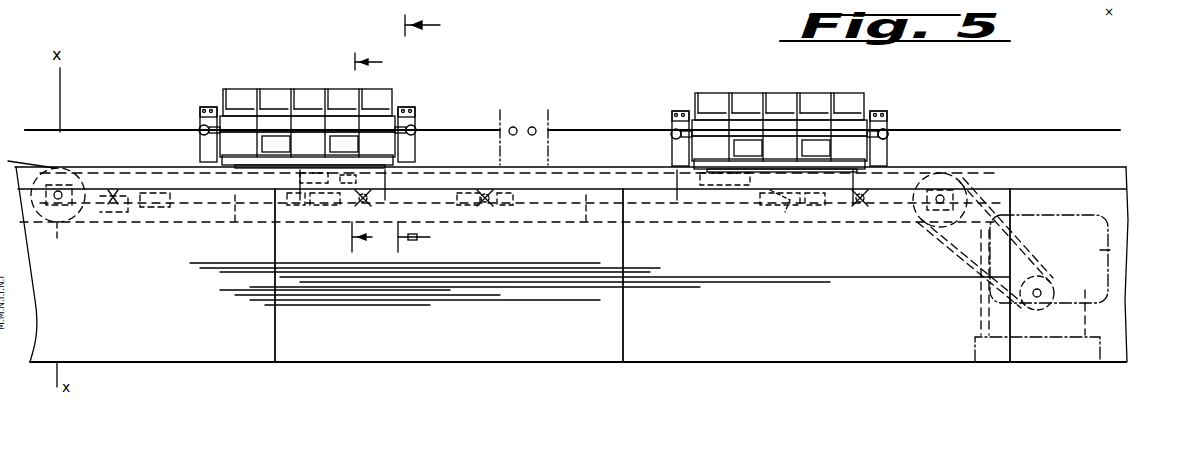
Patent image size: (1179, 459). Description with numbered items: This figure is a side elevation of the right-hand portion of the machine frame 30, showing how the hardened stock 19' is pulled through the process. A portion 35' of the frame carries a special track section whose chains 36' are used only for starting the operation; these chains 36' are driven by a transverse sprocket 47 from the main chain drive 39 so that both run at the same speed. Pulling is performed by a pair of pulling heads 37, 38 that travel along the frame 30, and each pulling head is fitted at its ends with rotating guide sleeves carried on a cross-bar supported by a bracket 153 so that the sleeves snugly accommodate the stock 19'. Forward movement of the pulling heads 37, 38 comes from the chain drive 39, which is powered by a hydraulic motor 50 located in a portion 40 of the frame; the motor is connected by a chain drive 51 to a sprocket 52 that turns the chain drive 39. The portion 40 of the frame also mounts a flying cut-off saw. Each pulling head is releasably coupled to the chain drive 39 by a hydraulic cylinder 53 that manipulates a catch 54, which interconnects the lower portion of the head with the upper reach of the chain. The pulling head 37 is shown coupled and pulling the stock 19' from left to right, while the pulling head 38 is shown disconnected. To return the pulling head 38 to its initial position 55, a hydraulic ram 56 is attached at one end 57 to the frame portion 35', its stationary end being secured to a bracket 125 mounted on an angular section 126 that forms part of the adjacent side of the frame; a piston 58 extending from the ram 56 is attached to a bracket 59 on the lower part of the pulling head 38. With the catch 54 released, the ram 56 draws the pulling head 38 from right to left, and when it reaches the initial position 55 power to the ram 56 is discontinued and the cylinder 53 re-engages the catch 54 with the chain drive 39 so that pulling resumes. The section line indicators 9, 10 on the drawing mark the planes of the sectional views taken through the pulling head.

The frame 30 is at (770, 367).
The hardened stock 19' is at (572, 130).
The chains of the track section 36' is at (105, 114).
The portion of the frame 35' is at (449, 291).
The pulling head 37 is at (376, 91).
The pulling head 38 is at (838, 62).
The bracket 153 is at (888, 124).
The initial position 55 is at (549, 125).
The section line 9 is at (425, 134).
The section line 10 is at (368, 143).
The transverse sprocket 47 is at (98, 238).
The bracket 125 is at (96, 243).
The angular section 126 is at (112, 228).
The chain drive 39 is at (170, 227).
The hydraulic ram 56 is at (236, 226).
The piston 58 is at (312, 213).
The hydraulic cylinder 53 is at (338, 215).
The catch 54 is at (785, 215).
The bracket 59 is at (387, 205).
The end of the ram 57 is at (486, 215).
The sprocket 52 is at (930, 227).
The chain drive 51 is at (965, 253).
The hydraulic motor 50 is at (1075, 217).
The portion of the frame 40 is at (938, 350).